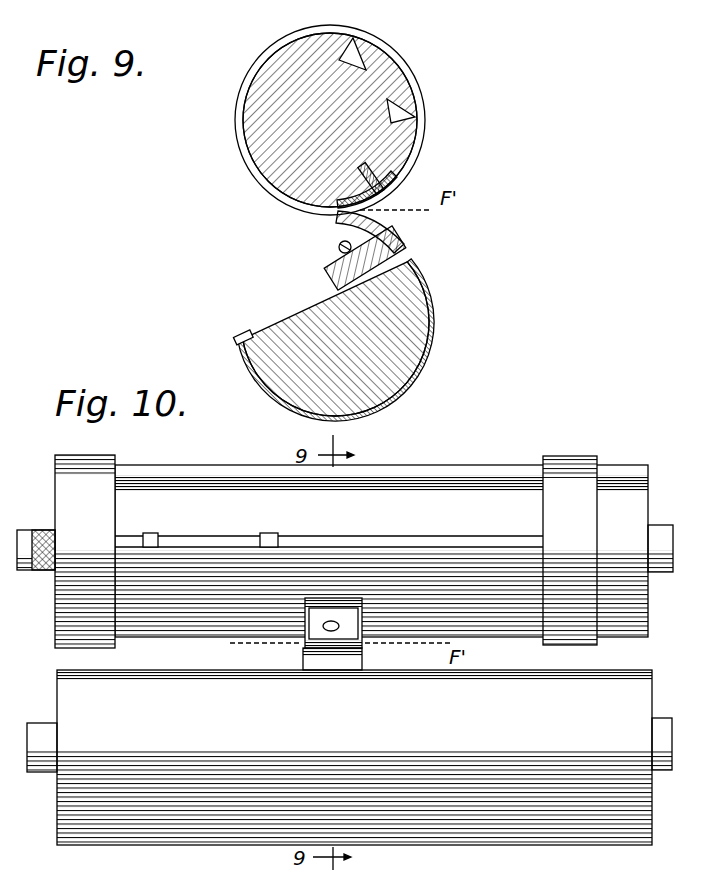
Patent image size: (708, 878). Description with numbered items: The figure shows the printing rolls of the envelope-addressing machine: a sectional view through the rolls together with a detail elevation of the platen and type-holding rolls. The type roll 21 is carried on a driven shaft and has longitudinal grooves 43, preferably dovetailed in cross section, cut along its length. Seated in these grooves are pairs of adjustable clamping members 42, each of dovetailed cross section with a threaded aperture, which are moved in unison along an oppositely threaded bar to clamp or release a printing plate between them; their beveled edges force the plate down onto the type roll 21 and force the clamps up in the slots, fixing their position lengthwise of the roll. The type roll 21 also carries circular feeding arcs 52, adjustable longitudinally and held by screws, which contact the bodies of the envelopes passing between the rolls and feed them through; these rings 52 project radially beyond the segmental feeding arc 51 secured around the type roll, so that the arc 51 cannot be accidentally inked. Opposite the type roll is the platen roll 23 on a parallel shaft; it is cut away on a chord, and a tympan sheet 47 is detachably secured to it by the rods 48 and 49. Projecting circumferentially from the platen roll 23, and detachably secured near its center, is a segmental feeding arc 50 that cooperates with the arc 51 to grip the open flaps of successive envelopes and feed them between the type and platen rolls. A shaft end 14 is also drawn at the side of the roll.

In FIG. 10, the shaft 14 is at (40, 530).
In FIG. 9, the type roll 21 is at (270, 127).
In FIG. 10, the type roll 21 is at (443, 495).
In FIG. 9, the platen roll 23 is at (305, 312).
In FIG. 10, the platen roll 23 is at (172, 669).
In FIG. 10, the clamping members 42 is at (159, 529).
In FIG. 9, the grooves 43 is at (398, 100).
In FIG. 10, the grooves 43 is at (396, 472).
In FIG. 9, the tympan sheet 47 is at (428, 368).
In FIG. 9, the rod 48 is at (246, 337).
In FIG. 9, the rod 49 is at (398, 238).
In FIG. 9, the segmental feeding arc 50 is at (390, 229).
In FIG. 10, the segmental feeding arc 50 is at (305, 660).
In FIG. 9, the segmental feeding arc 51 is at (397, 187).
In FIG. 10, the segmental feeding arc 51 is at (362, 648).
In FIG. 9, the circular feeding arcs 52 is at (424, 134).
In FIG. 10, the circular feeding arcs 52 is at (73, 600).